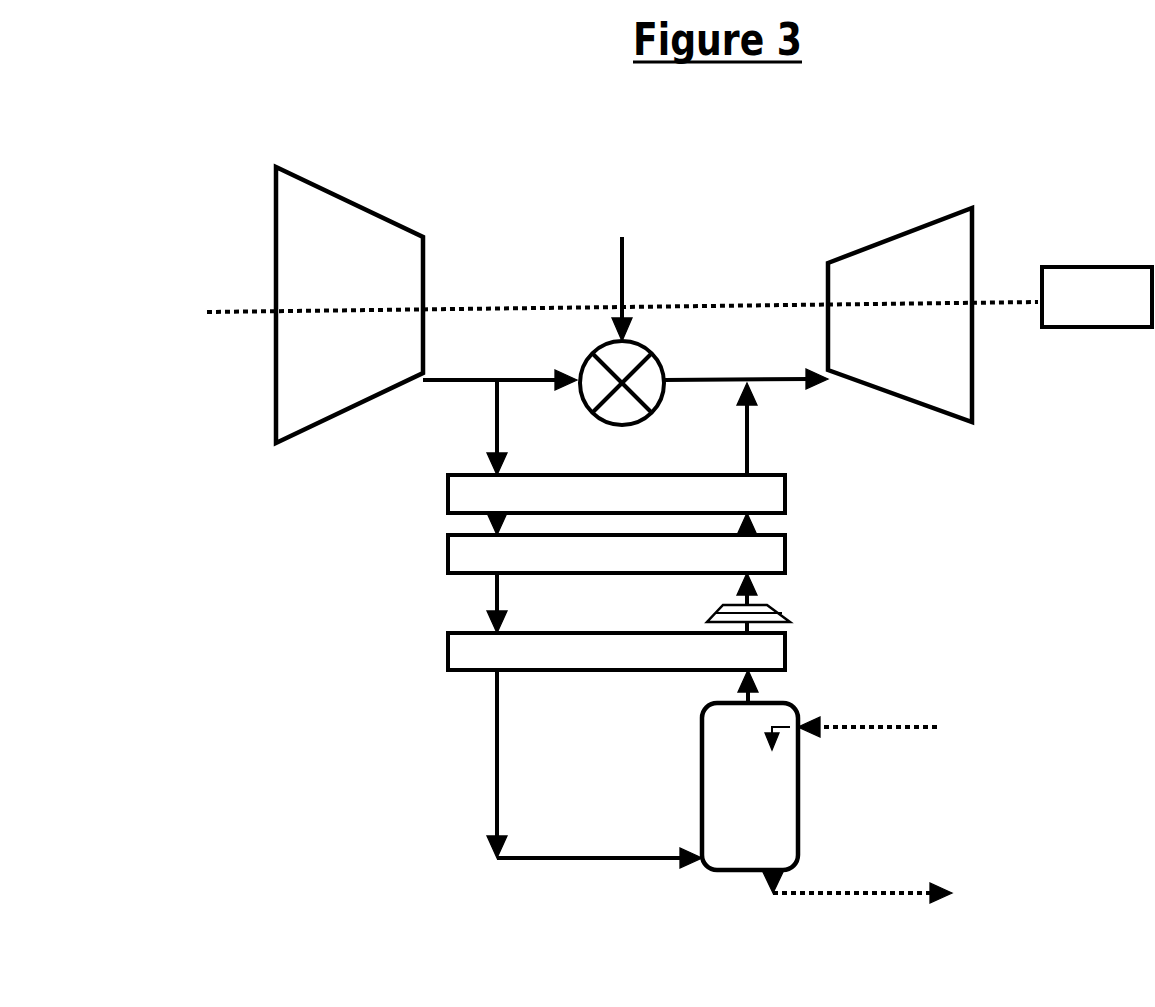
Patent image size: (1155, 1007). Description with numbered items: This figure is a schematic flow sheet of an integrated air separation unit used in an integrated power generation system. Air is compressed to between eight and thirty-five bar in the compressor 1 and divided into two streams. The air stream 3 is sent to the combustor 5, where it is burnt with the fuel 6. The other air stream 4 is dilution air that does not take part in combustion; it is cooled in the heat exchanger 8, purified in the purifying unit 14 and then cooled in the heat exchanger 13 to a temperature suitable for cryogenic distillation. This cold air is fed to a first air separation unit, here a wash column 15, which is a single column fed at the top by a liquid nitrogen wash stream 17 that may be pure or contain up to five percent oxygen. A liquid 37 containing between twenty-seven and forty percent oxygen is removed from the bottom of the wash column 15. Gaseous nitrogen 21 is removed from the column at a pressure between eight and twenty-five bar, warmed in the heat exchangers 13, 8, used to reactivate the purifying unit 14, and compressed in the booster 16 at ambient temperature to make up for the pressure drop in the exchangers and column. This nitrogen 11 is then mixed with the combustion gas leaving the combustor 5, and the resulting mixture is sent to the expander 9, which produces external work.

The compressor 1 is at (362, 263).
The air stream 3 is at (517, 378).
The air stream 4 is at (504, 427).
The combustor 5 is at (650, 378).
The fuel 6 is at (630, 273).
The heat exchanger 8 is at (616, 494).
The expander 9 is at (888, 293).
The nitrogen 11 is at (760, 429).
The heat exchanger 13 is at (616, 651).
The purifying unit 14 is at (616, 554).
The wash column 15 is at (727, 798).
The booster 16 is at (764, 603).
The liquid nitrogen wash stream 17 is at (858, 727).
The gaseous nitrogen 21 is at (757, 690).
The liquid 37 is at (833, 893).